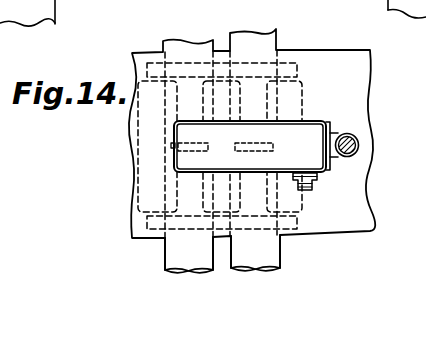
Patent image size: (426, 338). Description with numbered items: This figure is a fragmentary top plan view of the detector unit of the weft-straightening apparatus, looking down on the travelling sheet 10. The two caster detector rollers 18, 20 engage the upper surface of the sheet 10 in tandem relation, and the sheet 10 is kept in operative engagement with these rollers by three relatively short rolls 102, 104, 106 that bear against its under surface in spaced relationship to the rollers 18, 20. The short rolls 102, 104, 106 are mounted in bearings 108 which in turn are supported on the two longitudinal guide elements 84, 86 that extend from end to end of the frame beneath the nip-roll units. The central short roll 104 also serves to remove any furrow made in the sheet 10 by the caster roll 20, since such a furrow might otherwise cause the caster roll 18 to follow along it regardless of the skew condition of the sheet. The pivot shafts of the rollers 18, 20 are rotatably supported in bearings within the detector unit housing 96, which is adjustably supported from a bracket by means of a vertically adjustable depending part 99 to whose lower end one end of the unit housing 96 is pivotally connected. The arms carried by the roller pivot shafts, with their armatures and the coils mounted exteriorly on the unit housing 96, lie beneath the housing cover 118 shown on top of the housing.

The sheet 10 is at (348, 224).
The caster roller 18 is at (172, 146).
The caster roller 20 is at (250, 144).
The longitudinal guide element 84 is at (199, 271).
The longitudinal guide element 86 is at (277, 257).
The unit housing 96 is at (324, 118).
The depending part 99 is at (359, 146).
The short roll 102 is at (300, 95).
The short roll 104 is at (245, 87).
The short roll 106 is at (132, 83).
The bearings 108 is at (152, 63).
The housing cover 118 is at (292, 122).